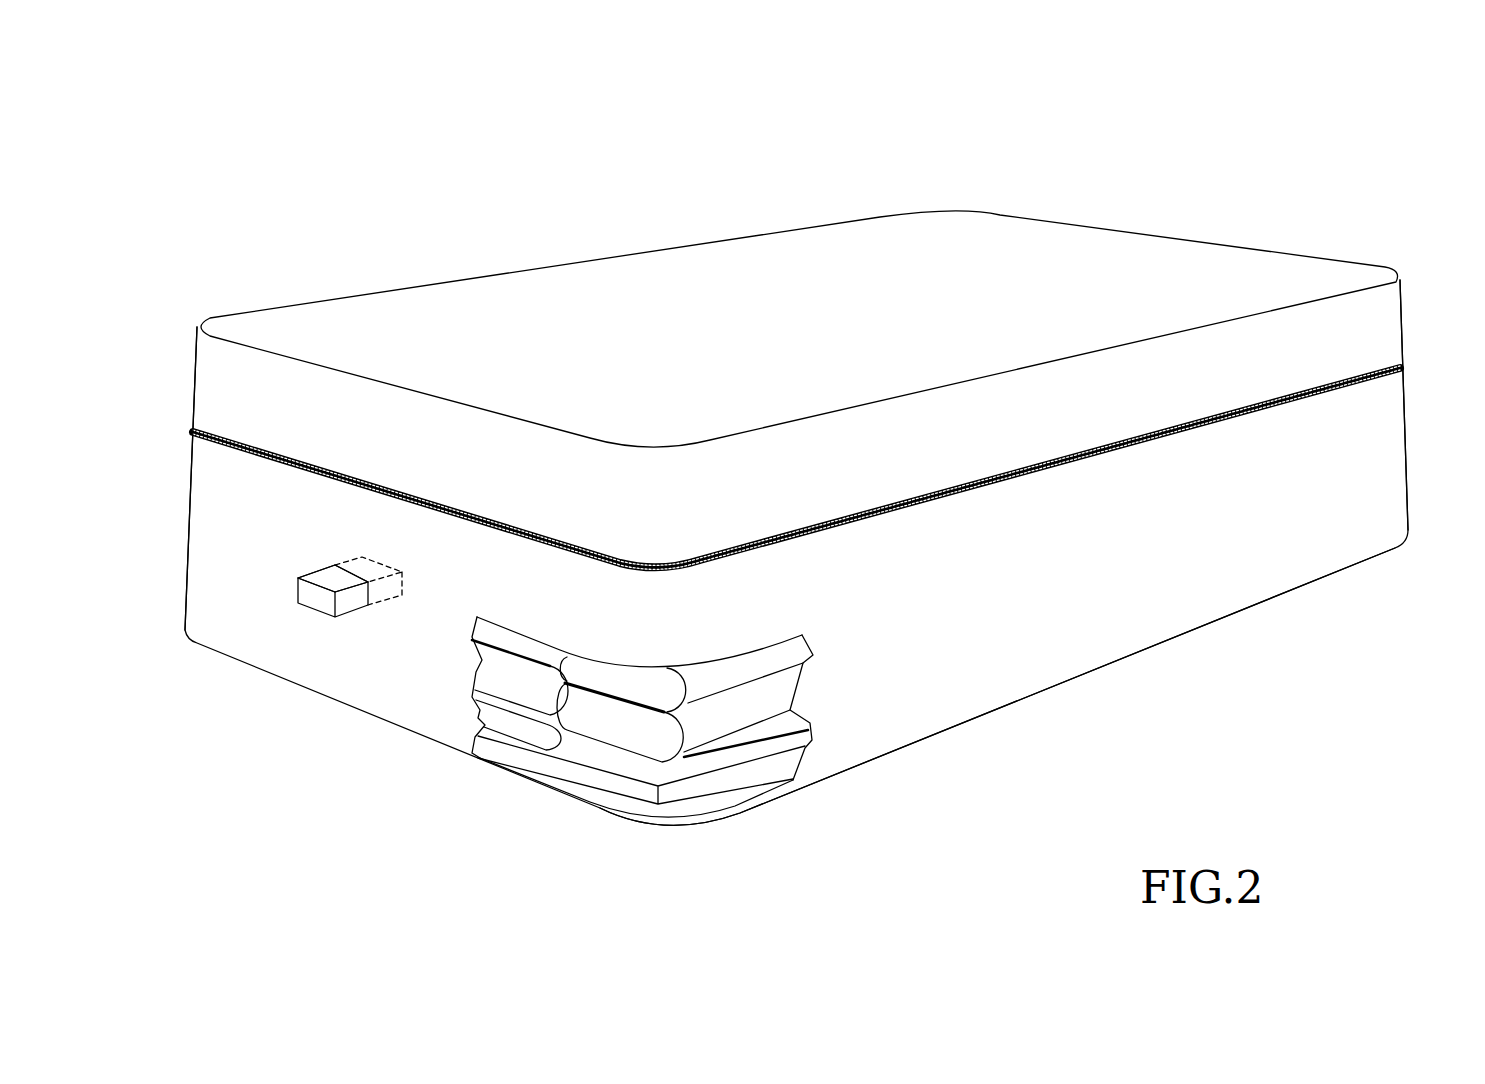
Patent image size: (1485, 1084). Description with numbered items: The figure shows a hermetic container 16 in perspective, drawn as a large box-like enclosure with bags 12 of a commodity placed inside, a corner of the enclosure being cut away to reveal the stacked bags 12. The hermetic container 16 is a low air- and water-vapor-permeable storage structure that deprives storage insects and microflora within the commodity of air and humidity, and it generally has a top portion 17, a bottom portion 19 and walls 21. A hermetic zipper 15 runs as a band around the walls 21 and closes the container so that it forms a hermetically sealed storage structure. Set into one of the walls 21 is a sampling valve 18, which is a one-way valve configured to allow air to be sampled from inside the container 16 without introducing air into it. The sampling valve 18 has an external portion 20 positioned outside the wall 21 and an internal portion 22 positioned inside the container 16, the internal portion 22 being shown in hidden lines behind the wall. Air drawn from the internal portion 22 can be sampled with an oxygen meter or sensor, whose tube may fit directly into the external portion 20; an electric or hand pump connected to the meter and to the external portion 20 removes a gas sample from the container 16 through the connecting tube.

The bags 12 is at (598, 717).
The hermetic zipper 15 is at (300, 457).
The hermetic container 16 is at (1205, 178).
The top portion 17 is at (980, 243).
The sampling valve 18 is at (310, 610).
The bottom portion 19 is at (1220, 620).
The external portion 20 is at (327, 577).
The walls 21 is at (185, 540).
The internal portion 22 is at (390, 600).